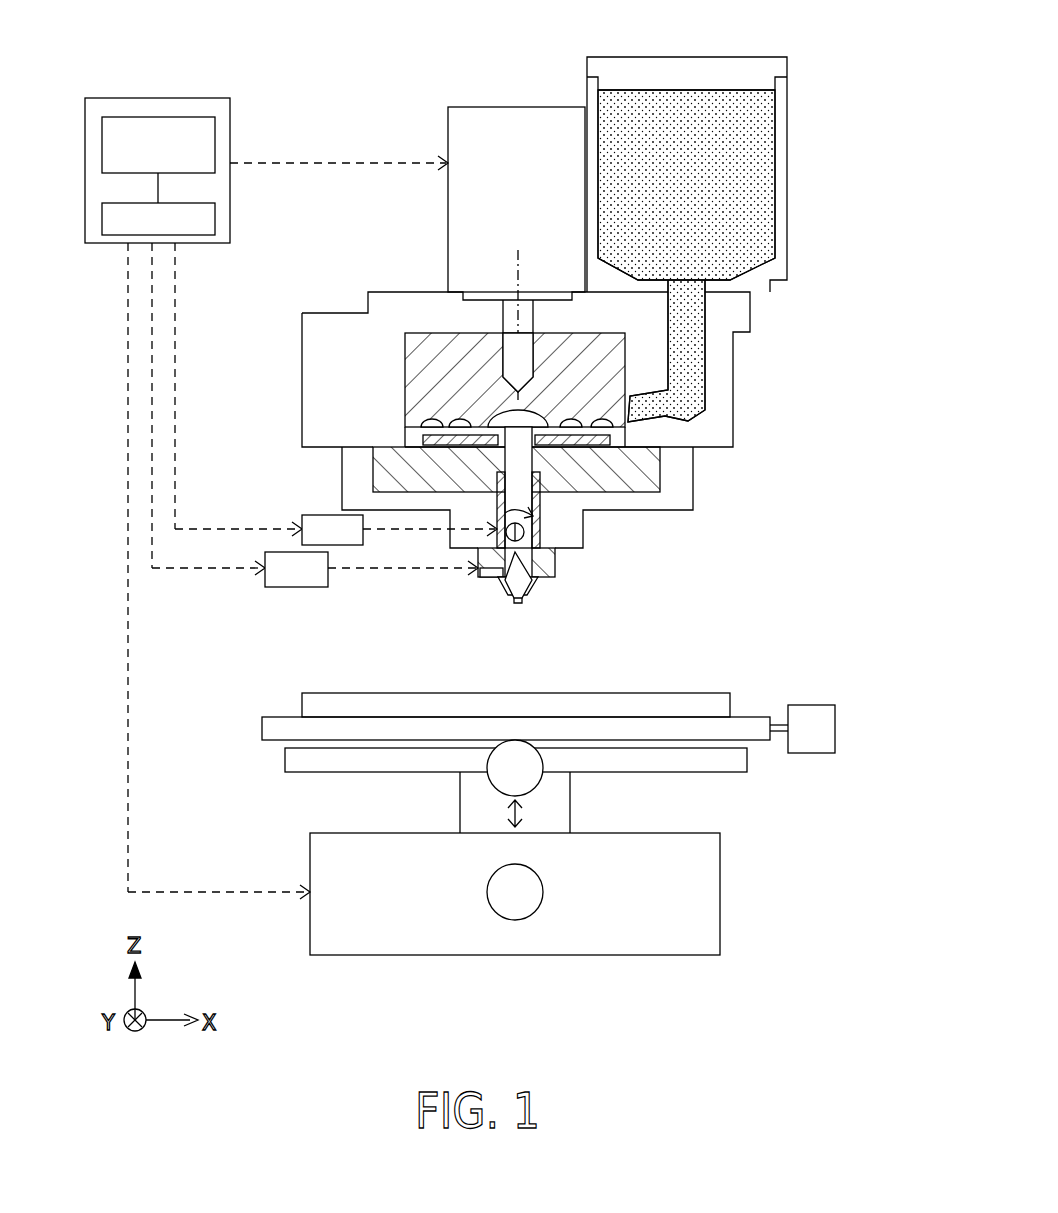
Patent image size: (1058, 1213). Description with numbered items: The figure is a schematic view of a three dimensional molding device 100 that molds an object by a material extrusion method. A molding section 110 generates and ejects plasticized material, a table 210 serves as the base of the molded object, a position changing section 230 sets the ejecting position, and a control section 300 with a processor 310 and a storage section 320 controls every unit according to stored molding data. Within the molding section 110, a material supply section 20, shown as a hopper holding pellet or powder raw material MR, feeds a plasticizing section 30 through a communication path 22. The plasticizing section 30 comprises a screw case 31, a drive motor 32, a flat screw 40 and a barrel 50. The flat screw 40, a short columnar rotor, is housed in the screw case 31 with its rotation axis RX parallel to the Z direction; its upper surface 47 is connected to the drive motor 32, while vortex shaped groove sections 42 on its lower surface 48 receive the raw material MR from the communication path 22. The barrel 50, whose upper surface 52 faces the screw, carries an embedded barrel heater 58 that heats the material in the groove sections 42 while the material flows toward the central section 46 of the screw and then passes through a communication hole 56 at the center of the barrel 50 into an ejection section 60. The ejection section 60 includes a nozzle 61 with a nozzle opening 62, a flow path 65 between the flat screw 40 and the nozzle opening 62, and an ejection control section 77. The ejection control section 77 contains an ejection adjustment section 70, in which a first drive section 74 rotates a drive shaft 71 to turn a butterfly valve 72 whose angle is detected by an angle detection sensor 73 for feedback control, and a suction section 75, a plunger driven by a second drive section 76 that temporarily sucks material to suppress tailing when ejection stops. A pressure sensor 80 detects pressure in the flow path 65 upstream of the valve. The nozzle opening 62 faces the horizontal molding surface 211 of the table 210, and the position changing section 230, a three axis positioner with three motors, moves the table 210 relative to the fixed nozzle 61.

The three dimensional molding device 100 is at (690, 40).
The molding section 110 is at (360, 132).
The material supply section 20 is at (787, 167).
The communication path 22 is at (690, 352).
The raw material MR is at (753, 135).
The plasticizing section 30 is at (365, 229).
The screw case 31 is at (418, 293).
The drive motor 32 is at (448, 130).
The rotation axis RX is at (517, 268).
The flat screw 40 is at (470, 376).
The groove sections 42 is at (455, 422).
The central section 46 is at (505, 408).
The upper surface 47 is at (432, 356).
The lower surface 48 is at (445, 440).
The barrel 50 is at (440, 468).
The upper surface of the barrel 52 is at (500, 433).
The communication hole 56 is at (695, 490).
The barrel heater 58 is at (652, 476).
The ejection section 60 is at (617, 602).
The nozzle 61 is at (505, 598).
The nozzle opening 62 is at (520, 605).
The flow path 65 is at (536, 500).
The ejection adjustment section 70 is at (486, 592).
The drive shaft 71 is at (535, 588).
The butterfly valve 72 is at (542, 548).
The angle detection sensor 73 is at (545, 524).
The first drive section 74 is at (305, 515).
The suction section 75 is at (478, 574).
The second drive section 76 is at (282, 587).
The ejection control section 77 is at (398, 598).
The pressure sensor 80 is at (540, 533).
The table 210 is at (677, 700).
The molding surface 211 is at (600, 697).
The position changing section 230 is at (770, 812).
The control section 300 is at (207, 98).
The processor 310 is at (215, 130).
The storage section 320 is at (215, 222).